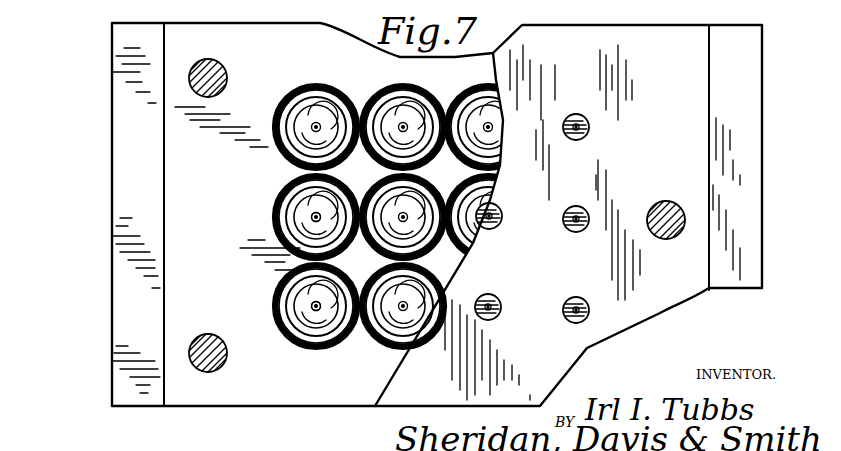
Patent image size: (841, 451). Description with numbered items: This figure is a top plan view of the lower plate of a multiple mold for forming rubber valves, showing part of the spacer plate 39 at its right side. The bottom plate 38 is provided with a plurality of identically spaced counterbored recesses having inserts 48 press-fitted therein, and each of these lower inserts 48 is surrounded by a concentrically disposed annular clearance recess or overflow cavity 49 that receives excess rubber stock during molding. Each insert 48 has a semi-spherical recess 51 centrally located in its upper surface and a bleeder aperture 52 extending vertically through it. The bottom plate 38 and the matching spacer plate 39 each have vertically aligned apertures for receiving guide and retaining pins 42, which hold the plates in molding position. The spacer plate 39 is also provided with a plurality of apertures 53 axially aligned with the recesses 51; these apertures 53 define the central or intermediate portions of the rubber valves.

The bottom plate 38 is at (112, 154).
The spacer plate 39 is at (677, 83).
The guide and retaining pins 42 is at (210, 372).
The inserts 48 is at (305, 100).
The annular clearance recess or overflow cavity 49 is at (292, 182).
The semi-spherical recess 51 is at (316, 216).
The bleeder aperture 52 is at (590, 125).
The apertures 53 is at (492, 320).